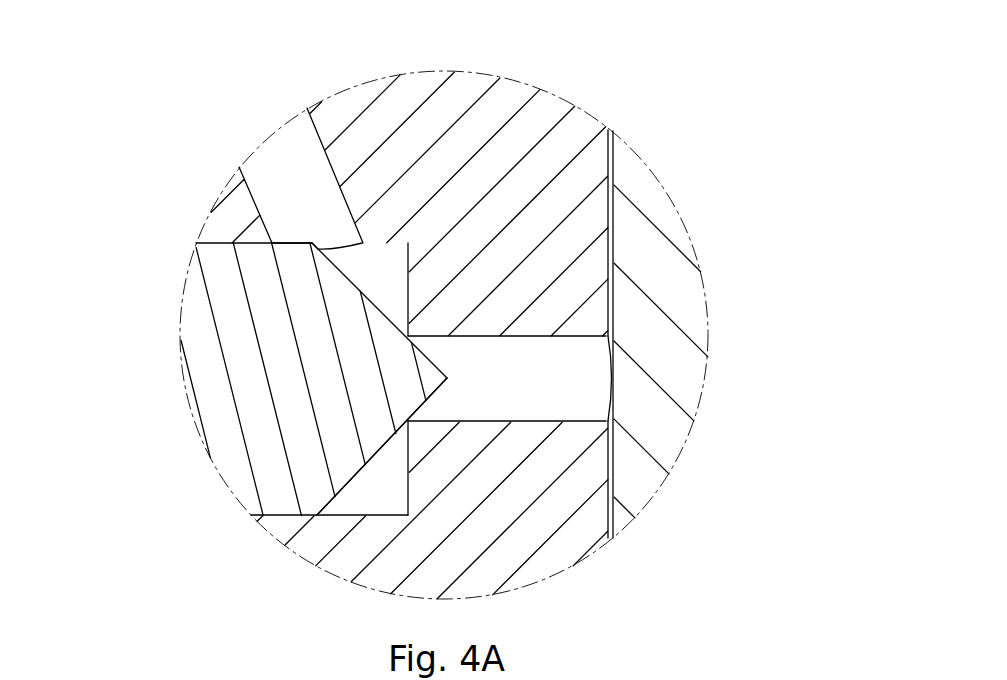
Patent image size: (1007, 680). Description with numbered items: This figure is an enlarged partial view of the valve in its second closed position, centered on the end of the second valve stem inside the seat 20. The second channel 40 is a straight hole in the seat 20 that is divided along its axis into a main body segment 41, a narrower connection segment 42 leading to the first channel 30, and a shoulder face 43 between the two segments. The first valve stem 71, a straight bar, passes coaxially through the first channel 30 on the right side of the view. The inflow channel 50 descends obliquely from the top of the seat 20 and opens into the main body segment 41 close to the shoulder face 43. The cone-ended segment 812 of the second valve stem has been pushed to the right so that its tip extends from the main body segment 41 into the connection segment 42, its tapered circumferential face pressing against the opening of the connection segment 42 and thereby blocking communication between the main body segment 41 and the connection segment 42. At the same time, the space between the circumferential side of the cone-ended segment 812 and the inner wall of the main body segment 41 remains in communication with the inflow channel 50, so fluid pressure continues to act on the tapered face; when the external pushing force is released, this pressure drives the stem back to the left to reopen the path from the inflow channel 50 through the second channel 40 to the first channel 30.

The seat 20 is at (532, 130).
The inflow channel 50 is at (275, 173).
The second channel 40 is at (510, 331).
The first channel 30 is at (613, 248).
The cone-ended segment 812 is at (210, 360).
The first valve stem 71 is at (668, 365).
The shoulder face 43 is at (405, 467).
The main body segment 41 is at (363, 492).
The connection segment 42 is at (507, 395).